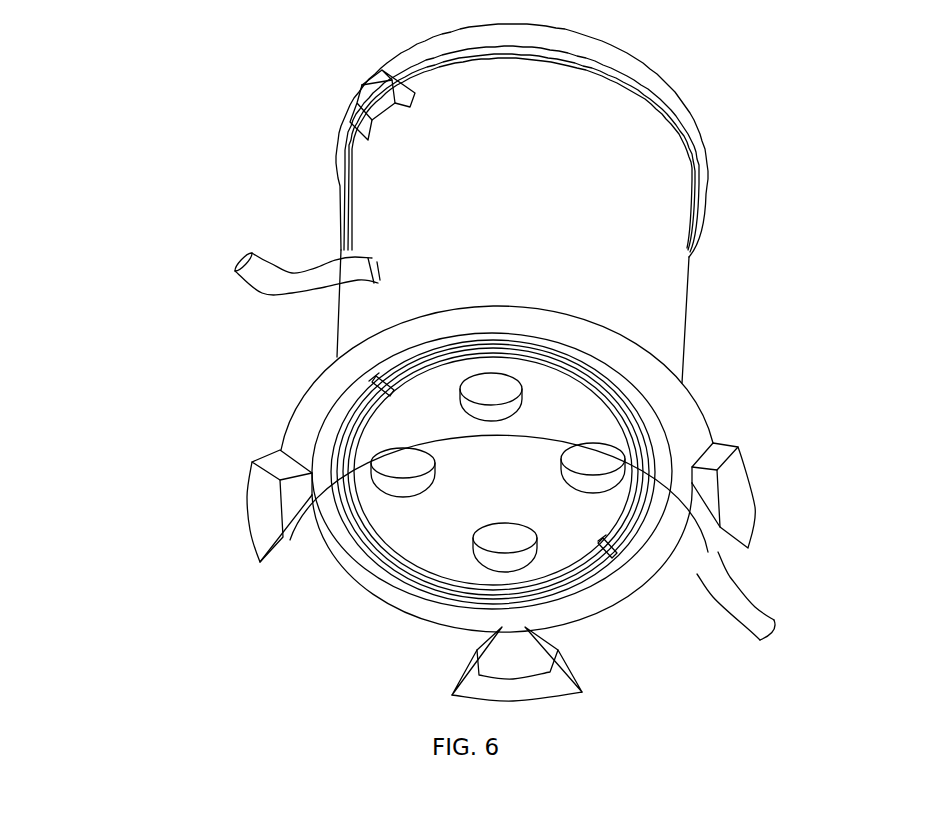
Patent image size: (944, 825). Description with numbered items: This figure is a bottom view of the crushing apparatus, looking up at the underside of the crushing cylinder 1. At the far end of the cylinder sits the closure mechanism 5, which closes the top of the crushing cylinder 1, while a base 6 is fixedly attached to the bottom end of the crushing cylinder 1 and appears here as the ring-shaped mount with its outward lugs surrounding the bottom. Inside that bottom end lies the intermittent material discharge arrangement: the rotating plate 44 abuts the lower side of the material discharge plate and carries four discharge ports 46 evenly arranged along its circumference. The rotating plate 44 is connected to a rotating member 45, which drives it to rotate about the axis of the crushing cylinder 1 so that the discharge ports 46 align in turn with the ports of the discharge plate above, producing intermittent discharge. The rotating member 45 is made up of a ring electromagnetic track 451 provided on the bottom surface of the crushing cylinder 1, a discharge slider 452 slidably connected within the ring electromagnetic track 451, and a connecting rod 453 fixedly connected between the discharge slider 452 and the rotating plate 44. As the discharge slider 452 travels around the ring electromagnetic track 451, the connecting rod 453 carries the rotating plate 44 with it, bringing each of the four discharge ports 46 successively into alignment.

The crushing cylinder 1 is at (663, 308).
The closure mechanism 5 is at (702, 122).
The base 6 is at (738, 500).
The rotating plate 44 is at (422, 527).
The rotating member 45 is at (355, 421).
The ring electromagnetic track 451 is at (343, 430).
The discharge slider 452 is at (372, 376).
The connecting rod 453 is at (370, 386).
The discharge ports 46 is at (488, 558).